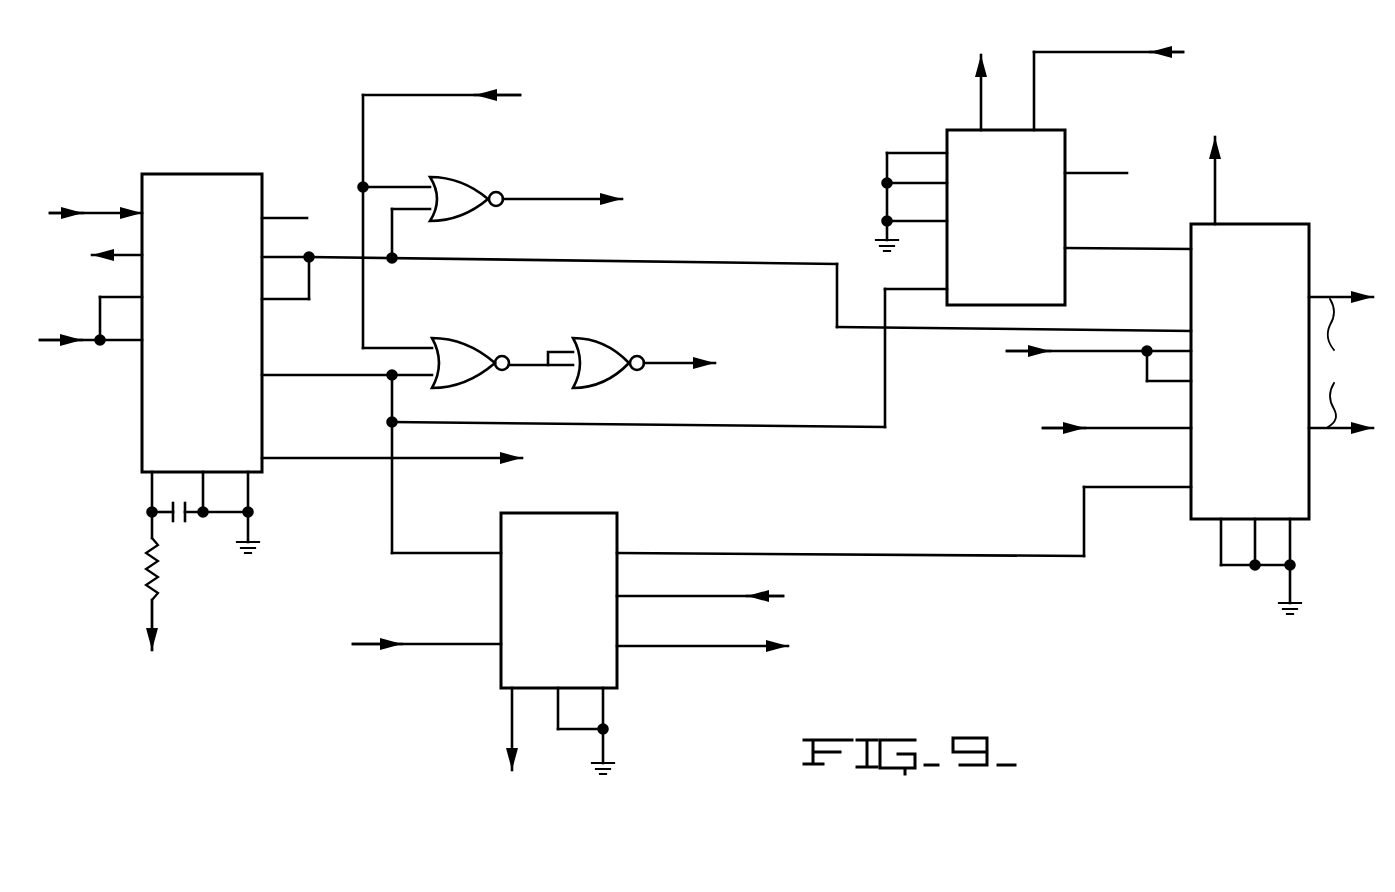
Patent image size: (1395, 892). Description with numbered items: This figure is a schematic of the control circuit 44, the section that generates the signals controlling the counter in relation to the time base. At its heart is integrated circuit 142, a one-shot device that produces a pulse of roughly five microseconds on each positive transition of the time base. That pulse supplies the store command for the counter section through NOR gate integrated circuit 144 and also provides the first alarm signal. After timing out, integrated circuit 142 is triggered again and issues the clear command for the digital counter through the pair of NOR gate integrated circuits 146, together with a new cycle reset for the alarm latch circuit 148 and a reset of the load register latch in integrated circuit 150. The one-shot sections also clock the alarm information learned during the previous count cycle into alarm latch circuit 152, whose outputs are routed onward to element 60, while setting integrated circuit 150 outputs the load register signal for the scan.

The integrated circuit 142 is at (178, 304).
The NOR gate integrated circuit 144 is at (443, 209).
The integrated circuits 146 is at (447, 373).
The alarm latch circuit 148 is at (985, 220).
The integrated circuit 150 is at (537, 607).
The alarm latch circuit 152 is at (1225, 385).
The control circuit 44 is at (953, 572).
The element 60 (destination of outputs) 60 is at (1344, 362).